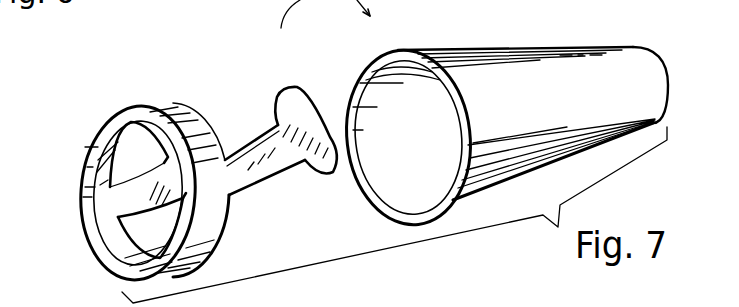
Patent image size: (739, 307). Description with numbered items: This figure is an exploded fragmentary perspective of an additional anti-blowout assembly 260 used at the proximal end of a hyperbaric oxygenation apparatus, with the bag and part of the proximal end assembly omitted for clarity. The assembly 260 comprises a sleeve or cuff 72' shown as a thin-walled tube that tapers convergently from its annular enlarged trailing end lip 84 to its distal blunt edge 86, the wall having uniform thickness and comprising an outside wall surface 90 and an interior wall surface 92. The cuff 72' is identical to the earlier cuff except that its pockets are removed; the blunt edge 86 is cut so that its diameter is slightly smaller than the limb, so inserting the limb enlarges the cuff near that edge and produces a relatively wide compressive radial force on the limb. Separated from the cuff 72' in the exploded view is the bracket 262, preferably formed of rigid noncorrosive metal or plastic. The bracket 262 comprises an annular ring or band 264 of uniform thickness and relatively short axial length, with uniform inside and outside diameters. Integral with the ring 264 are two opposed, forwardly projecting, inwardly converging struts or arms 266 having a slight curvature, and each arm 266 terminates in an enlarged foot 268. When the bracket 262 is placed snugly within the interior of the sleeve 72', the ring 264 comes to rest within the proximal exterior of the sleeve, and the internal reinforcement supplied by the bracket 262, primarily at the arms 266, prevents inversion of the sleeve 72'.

The anti-blowout assembly 260 is at (272, 80).
The bracket 262 is at (83, 133).
The annular ring 264 is at (222, 235).
The struts or arms 266 is at (128, 193).
The enlarged foot 268 is at (313, 97).
The sleeve or cuff 72' is at (526, 122).
The trailing end lip 84 is at (401, 50).
The distal blunt edge 86 is at (667, 82).
The outside wall surface 90 is at (578, 110).
The interior wall surface 92 is at (413, 157).